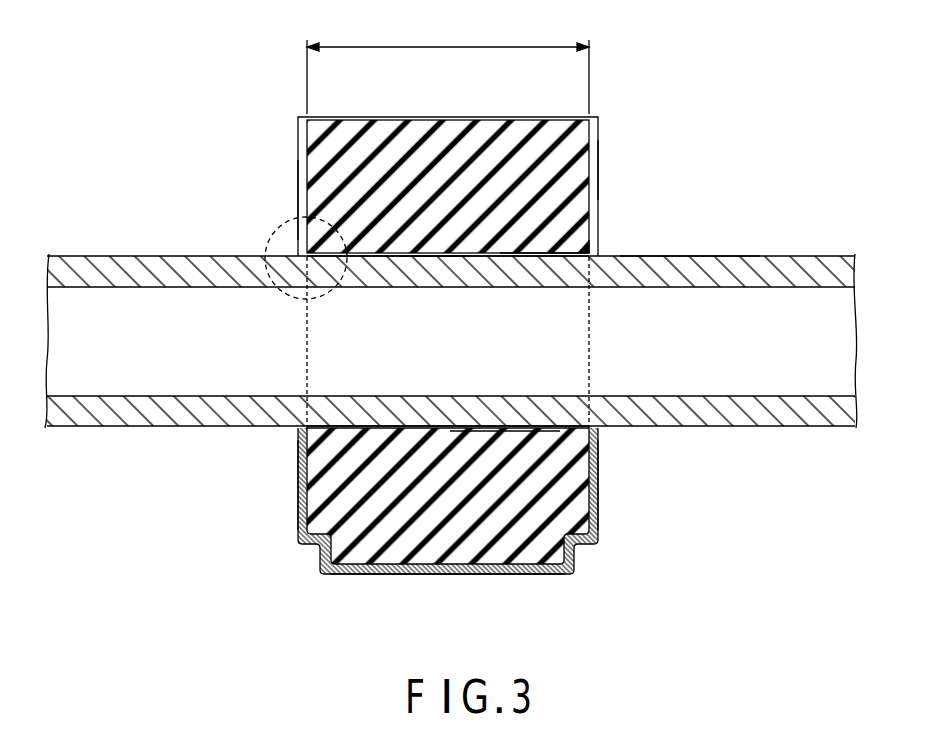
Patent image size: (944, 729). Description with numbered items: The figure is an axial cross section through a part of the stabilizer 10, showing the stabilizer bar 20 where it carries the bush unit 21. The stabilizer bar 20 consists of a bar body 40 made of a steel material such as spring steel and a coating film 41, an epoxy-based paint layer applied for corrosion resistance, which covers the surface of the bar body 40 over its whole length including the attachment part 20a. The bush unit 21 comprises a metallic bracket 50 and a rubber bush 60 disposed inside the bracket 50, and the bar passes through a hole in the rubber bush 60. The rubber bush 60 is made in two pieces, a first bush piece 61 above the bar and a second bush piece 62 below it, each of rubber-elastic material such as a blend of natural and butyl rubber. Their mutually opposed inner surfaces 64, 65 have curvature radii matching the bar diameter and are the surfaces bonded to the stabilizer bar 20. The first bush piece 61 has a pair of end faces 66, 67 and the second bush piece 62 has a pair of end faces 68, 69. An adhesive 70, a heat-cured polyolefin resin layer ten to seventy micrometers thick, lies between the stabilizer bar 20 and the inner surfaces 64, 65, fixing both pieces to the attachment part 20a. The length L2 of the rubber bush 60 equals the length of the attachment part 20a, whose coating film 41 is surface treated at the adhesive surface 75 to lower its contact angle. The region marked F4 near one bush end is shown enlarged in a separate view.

The vibration isolating mounting structure 10 is at (740, 97).
The stabilizer bar 20 is at (806, 252).
The attachment part 20a is at (428, 251).
The bush unit 21 is at (433, 580).
The bar body 40 is at (717, 263).
The coating film 41 is at (655, 257).
The bracket 50 is at (446, 543).
The rubber bush 60 is at (447, 155).
The first bush piece 61 is at (596, 128).
The second bush piece 62 is at (573, 508).
The inner surface 64 is at (470, 259).
The inner surface 65 is at (492, 425).
The end face 66 is at (300, 208).
The end face 67 is at (598, 165).
The end face 68 is at (298, 502).
The end face 69 is at (593, 492).
The adhesive 70 is at (537, 243).
The adhesive surface 75 is at (586, 250).
The length of rubber bush L2 is at (452, 46).
The enlarged portion F4 is at (266, 232).